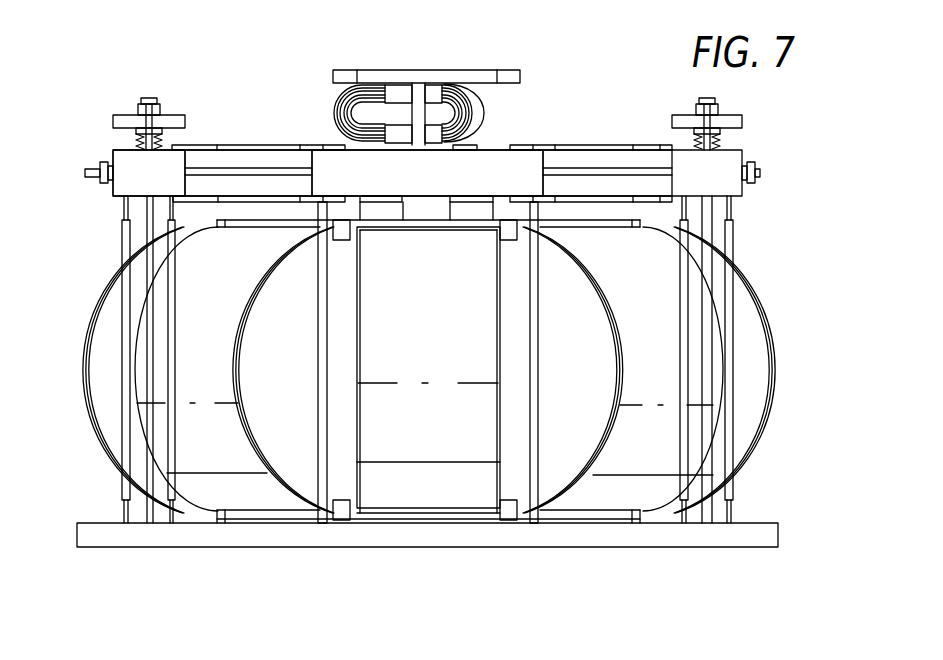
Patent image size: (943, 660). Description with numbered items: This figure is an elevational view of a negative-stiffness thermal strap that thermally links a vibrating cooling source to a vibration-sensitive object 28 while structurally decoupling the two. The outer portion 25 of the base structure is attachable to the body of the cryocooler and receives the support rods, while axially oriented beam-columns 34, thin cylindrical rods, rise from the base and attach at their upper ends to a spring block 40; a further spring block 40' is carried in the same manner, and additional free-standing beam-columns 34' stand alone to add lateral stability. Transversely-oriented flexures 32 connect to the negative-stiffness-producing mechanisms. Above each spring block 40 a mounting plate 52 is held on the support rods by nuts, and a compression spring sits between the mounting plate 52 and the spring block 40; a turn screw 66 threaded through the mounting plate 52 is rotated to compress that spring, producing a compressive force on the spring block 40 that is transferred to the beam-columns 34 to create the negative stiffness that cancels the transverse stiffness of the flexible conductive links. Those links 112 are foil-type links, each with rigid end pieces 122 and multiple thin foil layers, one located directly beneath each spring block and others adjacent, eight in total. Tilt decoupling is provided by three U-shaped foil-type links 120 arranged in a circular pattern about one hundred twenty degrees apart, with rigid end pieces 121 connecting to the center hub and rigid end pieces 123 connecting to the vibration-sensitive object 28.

The outer portion 25 is at (190, 536).
The vibration-sensitive object 28 is at (505, 70).
The transversely-oriented flexures 32 is at (234, 144).
The beam-columns 34 is at (435, 359).
The free standing beam-columns 34' is at (428, 362).
The spring block 40 is at (123, 167).
The center block 40' is at (430, 157).
The mounting plate 52 is at (118, 120).
The turn screw 66 is at (150, 97).
The FCL 112 is at (90, 328).
The foil-type FCLs 120 is at (337, 112).
The rigid end pieces 121 is at (393, 143).
The rigid end piece 122 is at (367, 228).
The rigid end pieces 123 is at (400, 90).